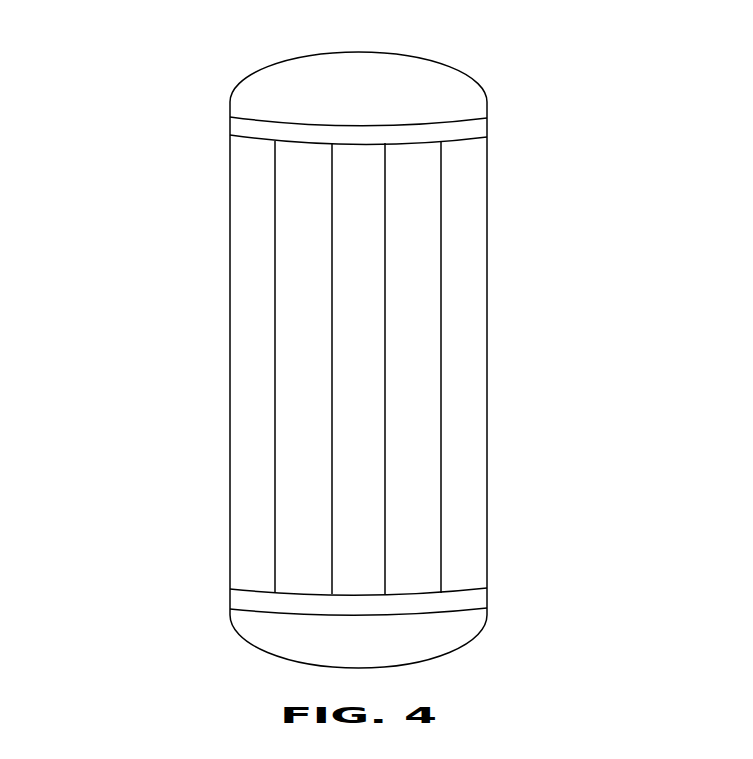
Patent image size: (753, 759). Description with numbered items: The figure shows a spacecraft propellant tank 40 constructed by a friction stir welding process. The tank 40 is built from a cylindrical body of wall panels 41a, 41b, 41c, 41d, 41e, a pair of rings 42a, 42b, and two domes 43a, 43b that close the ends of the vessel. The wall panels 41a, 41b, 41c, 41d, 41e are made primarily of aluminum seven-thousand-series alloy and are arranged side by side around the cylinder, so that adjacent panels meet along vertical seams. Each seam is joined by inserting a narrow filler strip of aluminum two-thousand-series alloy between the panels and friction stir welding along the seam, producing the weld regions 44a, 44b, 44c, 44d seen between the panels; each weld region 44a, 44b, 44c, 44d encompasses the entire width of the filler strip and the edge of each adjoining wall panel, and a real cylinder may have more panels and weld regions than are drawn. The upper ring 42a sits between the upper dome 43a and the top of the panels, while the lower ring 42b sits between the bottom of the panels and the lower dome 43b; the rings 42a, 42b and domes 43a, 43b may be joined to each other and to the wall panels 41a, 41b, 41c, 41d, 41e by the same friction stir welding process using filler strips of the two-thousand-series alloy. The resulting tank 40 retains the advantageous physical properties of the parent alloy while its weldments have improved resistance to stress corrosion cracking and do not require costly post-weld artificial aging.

The spacecraft propellant tank 40 is at (213, 262).
The wall panel 41a is at (252, 358).
The wall panel 41b is at (303, 367).
The wall panel 41c is at (358, 367).
The wall panel 41d is at (413, 367).
The wall panel 41e is at (464, 358).
The ring 42a is at (362, 136).
The ring 42b is at (353, 609).
The dome 43a is at (358, 77).
The dome 43b is at (358, 641).
The weld region 44a is at (274, 496).
The weld region 44b is at (333, 497).
The weld region 44c is at (388, 472).
The weld region 44d is at (442, 544).